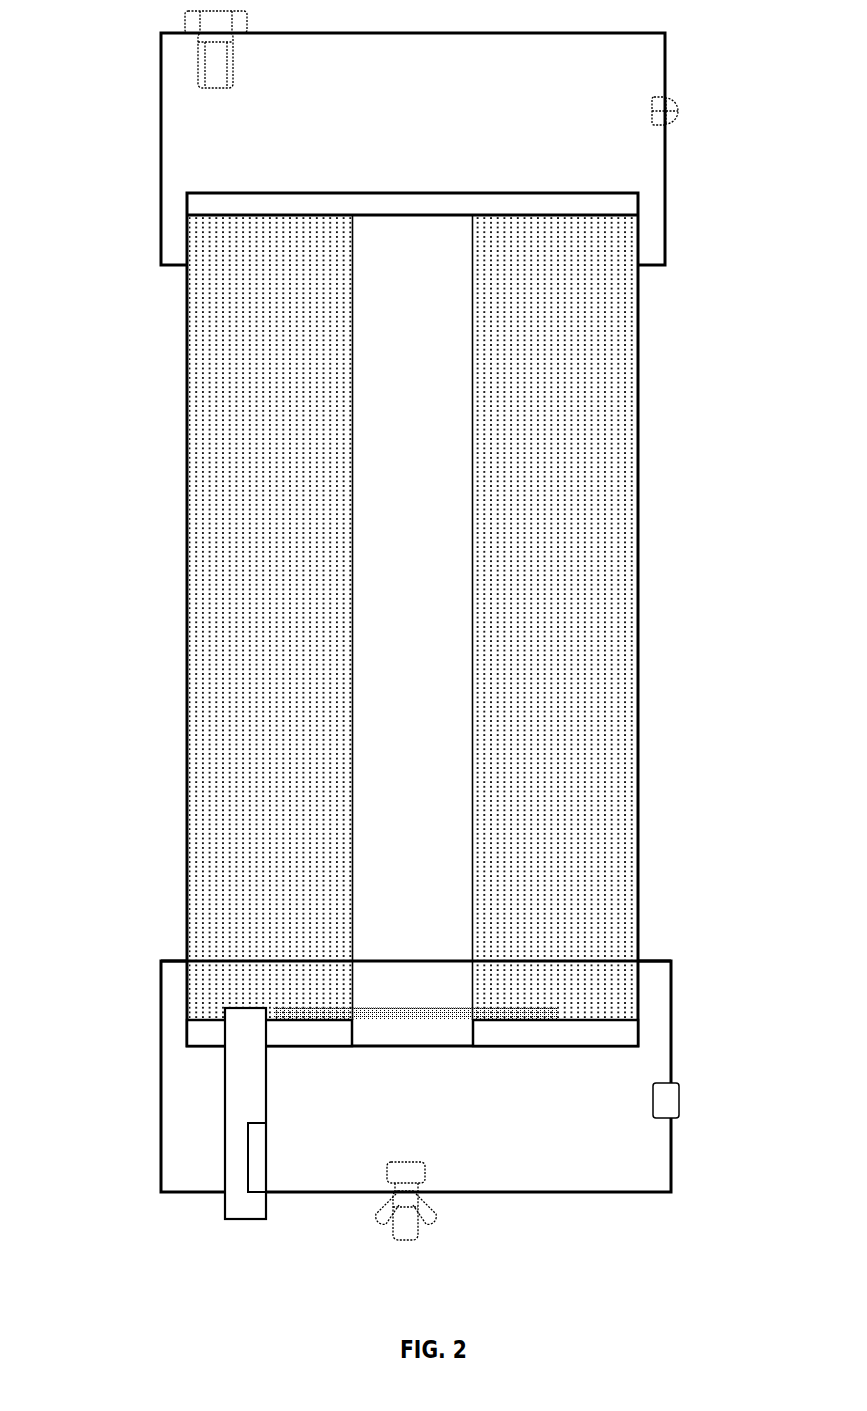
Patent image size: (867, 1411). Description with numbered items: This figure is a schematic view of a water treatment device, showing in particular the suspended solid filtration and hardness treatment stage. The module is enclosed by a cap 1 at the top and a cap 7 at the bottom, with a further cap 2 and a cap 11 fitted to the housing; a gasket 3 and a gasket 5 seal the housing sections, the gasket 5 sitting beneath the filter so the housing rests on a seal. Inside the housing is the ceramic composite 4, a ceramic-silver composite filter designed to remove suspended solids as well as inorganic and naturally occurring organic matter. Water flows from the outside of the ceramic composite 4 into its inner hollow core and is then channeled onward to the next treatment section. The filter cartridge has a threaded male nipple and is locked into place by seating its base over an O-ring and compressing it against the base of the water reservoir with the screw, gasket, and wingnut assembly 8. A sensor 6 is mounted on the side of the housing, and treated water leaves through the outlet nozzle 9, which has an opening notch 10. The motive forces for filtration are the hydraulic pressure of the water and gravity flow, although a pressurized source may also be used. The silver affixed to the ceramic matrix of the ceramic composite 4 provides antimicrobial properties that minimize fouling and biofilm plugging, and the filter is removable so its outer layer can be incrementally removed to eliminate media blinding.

The cap 1 is at (602, 47).
The cap 2 is at (677, 97).
The gasket 3 is at (600, 202).
The ceramic composite 4 is at (600, 355).
The gasket 5 is at (587, 1033).
The sensor 6 is at (679, 1098).
The cap 7 is at (600, 1171).
The screw, gasket, and wingnut assembly 8 is at (407, 1162).
The outlet nozzle 9 is at (246, 1113).
The opening notch 10 is at (258, 1160).
The cap 11 is at (198, 59).